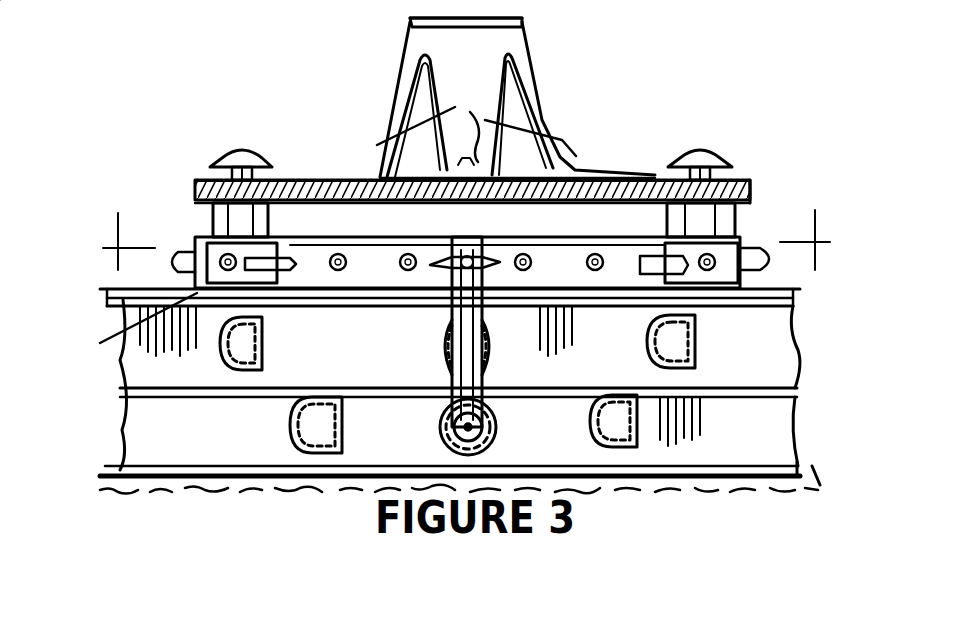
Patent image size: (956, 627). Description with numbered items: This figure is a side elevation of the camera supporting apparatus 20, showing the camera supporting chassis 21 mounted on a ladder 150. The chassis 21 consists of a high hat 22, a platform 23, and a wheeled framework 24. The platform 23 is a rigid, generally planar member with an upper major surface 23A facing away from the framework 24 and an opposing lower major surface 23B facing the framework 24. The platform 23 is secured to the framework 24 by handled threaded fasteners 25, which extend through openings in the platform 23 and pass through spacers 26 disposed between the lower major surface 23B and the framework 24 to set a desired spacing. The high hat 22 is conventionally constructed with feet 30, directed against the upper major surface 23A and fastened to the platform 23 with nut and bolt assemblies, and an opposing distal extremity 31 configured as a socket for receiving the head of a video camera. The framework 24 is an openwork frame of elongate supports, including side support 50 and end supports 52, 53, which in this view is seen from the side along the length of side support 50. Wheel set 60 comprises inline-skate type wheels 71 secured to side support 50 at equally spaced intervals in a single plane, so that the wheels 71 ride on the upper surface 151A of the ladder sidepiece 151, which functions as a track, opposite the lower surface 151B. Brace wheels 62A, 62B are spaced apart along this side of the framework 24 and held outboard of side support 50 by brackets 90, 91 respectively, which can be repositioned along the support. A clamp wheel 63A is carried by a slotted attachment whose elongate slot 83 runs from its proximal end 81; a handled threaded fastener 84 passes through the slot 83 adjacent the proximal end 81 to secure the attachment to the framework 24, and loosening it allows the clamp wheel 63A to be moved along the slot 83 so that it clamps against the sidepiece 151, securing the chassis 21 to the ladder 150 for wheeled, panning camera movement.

The camera supporting apparatus 20 is at (343, 53).
The camera supporting chassis 21 is at (750, 178).
The high hat 22 is at (533, 83).
The platform 23 is at (195, 185).
The upper major surface 23A is at (322, 178).
The lower major surface 23B is at (388, 204).
The wheeled framework 24 is at (530, 243).
The handled threaded fasteners 25 is at (245, 152).
The spacers 26 is at (210, 218).
The feet 30 is at (476, 115).
The distal extremity 31 is at (522, 18).
The side support 50 is at (370, 308).
The end support 52 is at (790, 293).
The end support 53 is at (195, 288).
The wheel set 60 is at (540, 308).
The brace wheel 62A is at (259, 385).
The brace wheel 62B is at (677, 381).
The clamp wheel 63A is at (492, 432).
The wheels 71 is at (302, 300).
The proximal end 81 is at (470, 238).
The elongate slot 83 is at (498, 396).
The handled threaded fastener 84 is at (263, 245).
The bracket 90 is at (128, 329).
The bracket 91 is at (742, 232).
The ladder 150 is at (798, 392).
The sidepiece 151 is at (120, 398).
The upper surface 151A is at (804, 362).
The lower surface 151B is at (735, 398).